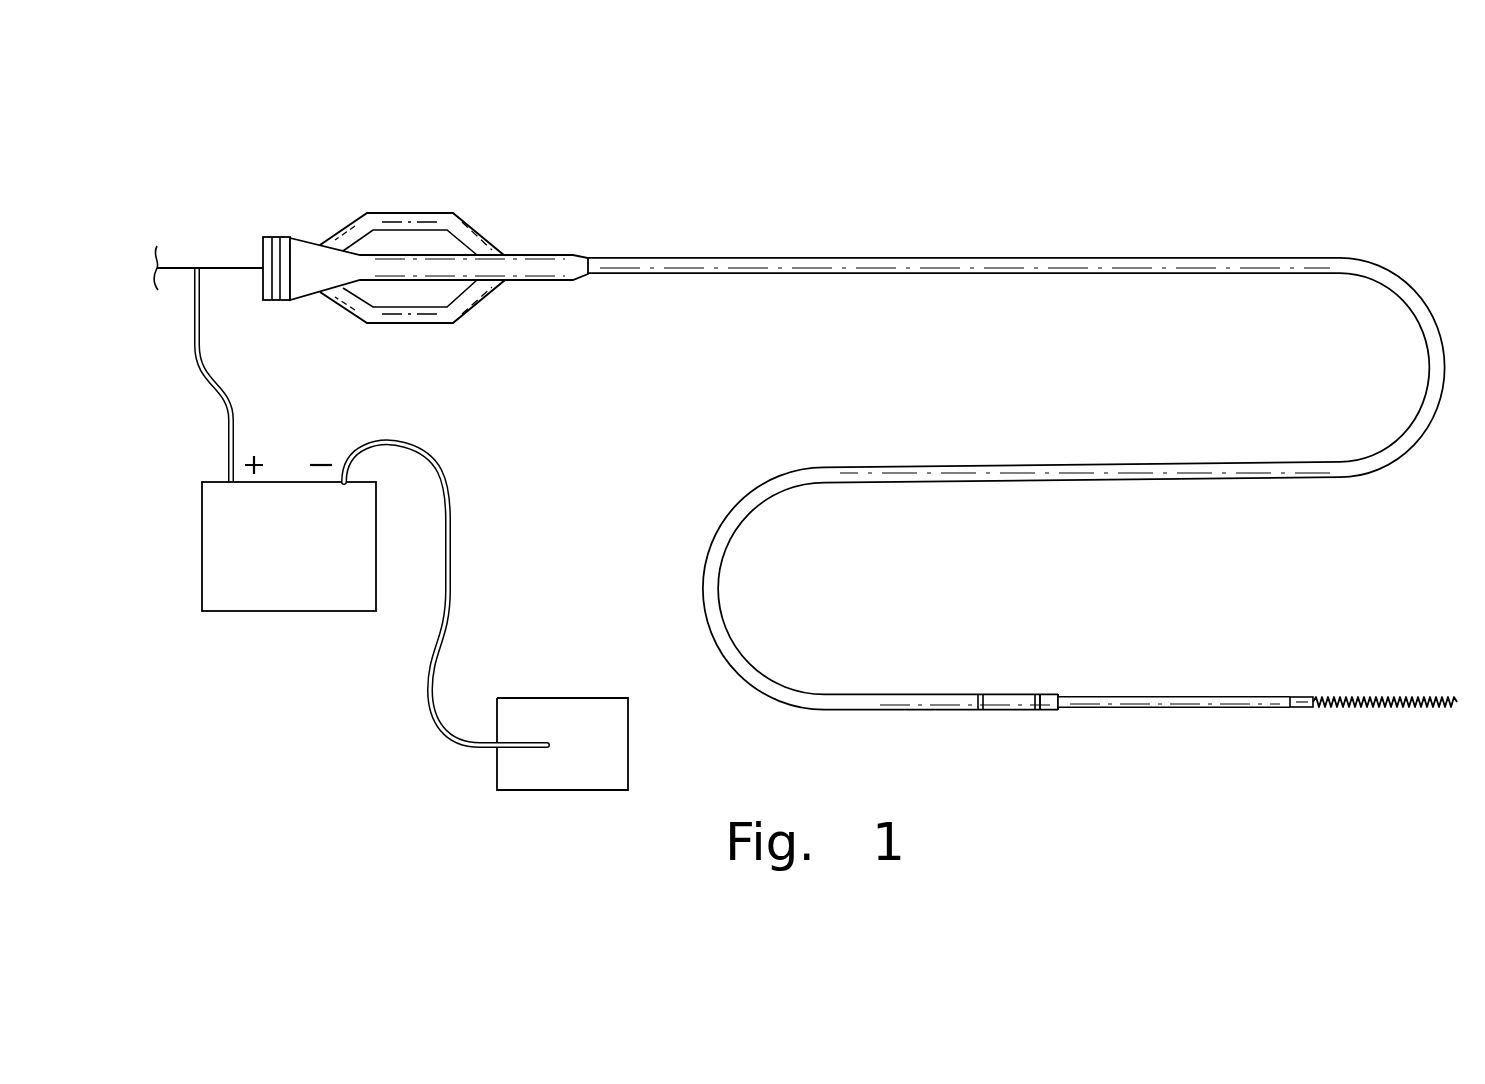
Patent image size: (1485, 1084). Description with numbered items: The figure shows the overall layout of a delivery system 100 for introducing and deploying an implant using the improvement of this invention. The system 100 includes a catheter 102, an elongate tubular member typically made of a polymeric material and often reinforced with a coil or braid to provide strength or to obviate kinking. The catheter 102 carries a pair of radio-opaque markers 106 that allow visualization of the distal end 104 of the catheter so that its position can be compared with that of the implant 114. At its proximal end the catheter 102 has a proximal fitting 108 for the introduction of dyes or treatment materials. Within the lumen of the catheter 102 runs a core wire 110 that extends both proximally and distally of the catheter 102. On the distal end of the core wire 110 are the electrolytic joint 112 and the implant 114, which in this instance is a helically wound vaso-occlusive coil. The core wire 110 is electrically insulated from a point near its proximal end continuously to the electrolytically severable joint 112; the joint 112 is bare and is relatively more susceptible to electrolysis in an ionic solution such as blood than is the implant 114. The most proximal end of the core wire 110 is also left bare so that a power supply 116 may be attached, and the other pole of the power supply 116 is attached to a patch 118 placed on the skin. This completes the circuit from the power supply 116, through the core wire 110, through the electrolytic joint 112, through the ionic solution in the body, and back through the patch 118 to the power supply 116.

The system 100 is at (1308, 182).
The catheter 102 is at (910, 257).
The distal end 104 is at (1062, 694).
The radio-opaque markers 106 is at (1035, 712).
The proximal fitting 108 is at (452, 212).
The core wire 110 is at (219, 264).
The electrolytic joint 112 is at (935, 466).
The implant 114 is at (1410, 707).
The power supply 116 is at (282, 612).
The patch 118 is at (553, 714).